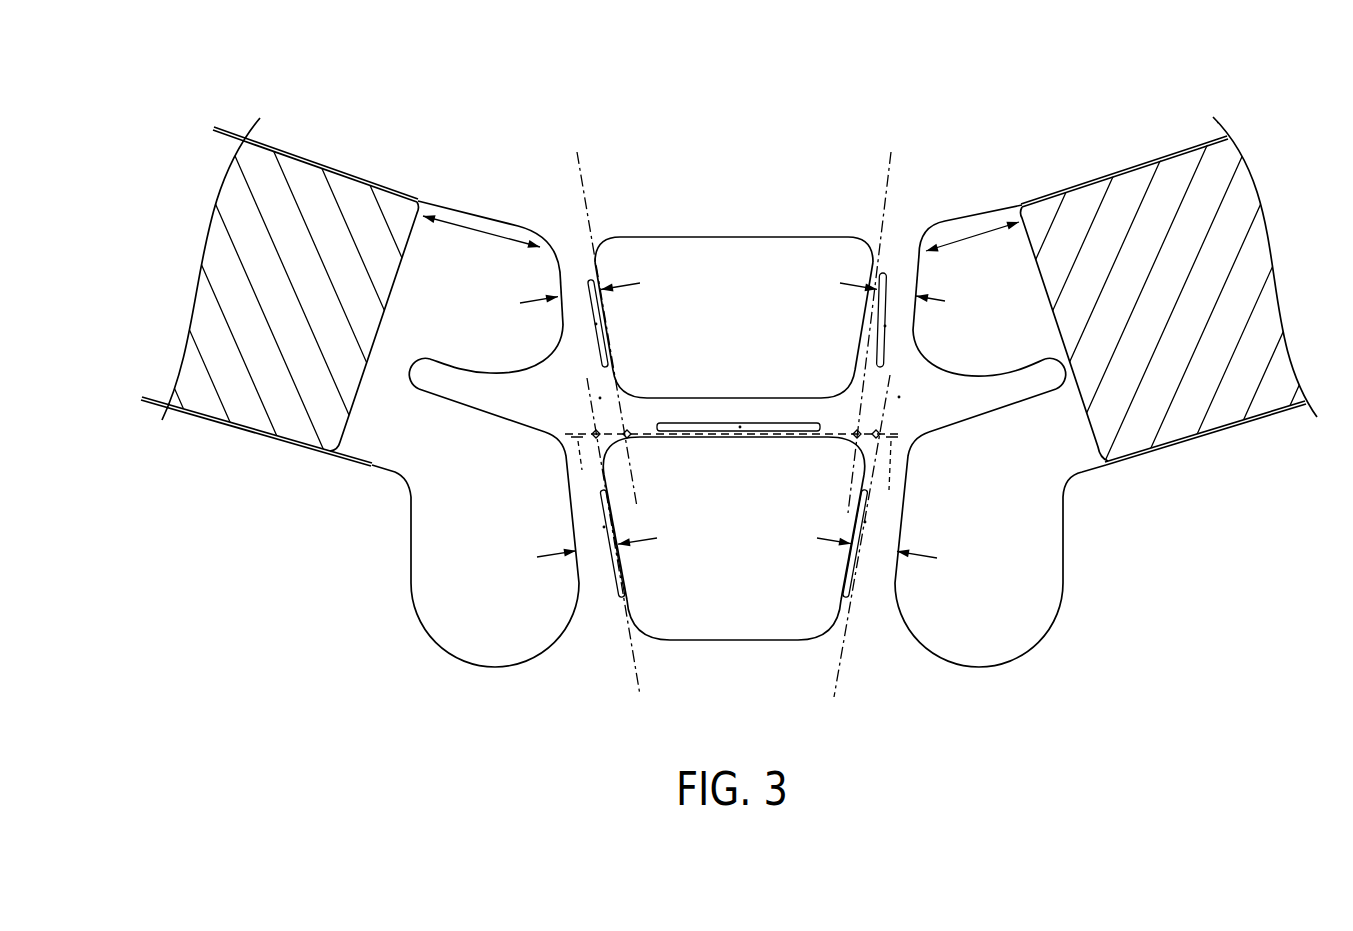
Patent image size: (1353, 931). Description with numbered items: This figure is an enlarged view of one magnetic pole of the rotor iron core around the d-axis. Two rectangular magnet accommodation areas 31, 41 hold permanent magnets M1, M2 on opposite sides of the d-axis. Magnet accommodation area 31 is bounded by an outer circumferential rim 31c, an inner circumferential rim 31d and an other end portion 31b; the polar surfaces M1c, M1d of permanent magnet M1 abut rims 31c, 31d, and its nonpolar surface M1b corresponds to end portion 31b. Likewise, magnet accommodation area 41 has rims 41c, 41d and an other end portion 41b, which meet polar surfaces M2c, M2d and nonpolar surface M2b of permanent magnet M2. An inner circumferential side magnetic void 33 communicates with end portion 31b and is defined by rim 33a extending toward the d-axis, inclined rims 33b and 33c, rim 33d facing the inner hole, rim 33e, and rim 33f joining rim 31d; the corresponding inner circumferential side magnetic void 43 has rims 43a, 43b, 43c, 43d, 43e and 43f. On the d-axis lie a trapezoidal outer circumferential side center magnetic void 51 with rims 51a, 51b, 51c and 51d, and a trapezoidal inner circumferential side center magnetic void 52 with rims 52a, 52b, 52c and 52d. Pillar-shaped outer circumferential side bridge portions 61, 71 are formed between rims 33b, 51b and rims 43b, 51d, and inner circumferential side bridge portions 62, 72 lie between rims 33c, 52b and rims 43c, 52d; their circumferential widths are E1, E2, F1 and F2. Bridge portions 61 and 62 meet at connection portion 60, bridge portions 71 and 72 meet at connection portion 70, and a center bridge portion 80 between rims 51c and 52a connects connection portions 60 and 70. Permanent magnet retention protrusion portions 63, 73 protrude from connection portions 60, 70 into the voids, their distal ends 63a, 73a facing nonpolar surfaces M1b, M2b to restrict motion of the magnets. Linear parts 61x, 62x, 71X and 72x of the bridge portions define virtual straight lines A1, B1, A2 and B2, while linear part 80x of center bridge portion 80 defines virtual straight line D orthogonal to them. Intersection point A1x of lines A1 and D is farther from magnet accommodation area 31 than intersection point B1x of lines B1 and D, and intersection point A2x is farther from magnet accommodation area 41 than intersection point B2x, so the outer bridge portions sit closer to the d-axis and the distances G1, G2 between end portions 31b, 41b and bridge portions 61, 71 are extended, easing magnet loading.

The magnet accommodation area 31 is at (282, 267).
The other end portion 31b is at (397, 171).
The outer circumferential side rim 31c is at (270, 138).
The inner circumferential side rim 31d is at (193, 415).
The inner circumferential side magnetic void 33 is at (475, 397).
The rim 33a is at (514, 225).
The rim 33b is at (556, 278).
The rim 33c is at (571, 491).
The rim 33d is at (527, 660).
The rim 33e is at (411, 541).
The rim 33f is at (375, 465).
The permanent magnet M1 is at (292, 294).
The nonpolar surface M1b is at (396, 291).
The polar surface M1c is at (314, 168).
The polar surface M1d is at (236, 421).
The magnet accommodation area 41 is at (1163, 269).
The other end portion 41b is at (1023, 200).
The outer circumferential side rim 41c is at (1200, 139).
The inner circumferential side rim 41d is at (1273, 415).
The inner circumferential side magnetic void 43 is at (1000, 402).
The rim 43a is at (968, 224).
The rim 43b is at (921, 276).
The rim 43c is at (906, 478).
The rim 43d is at (948, 660).
The rim 43e is at (1063, 550).
The rim 43f is at (1088, 468).
The permanent magnet M2 is at (1107, 299).
The nonpolar surface M2b is at (1046, 307).
The polar surface M2c is at (1162, 168).
The polar surface M2d is at (1201, 428).
The outer circumferential side center magnetic void 51 is at (734, 291).
The rim 51a is at (693, 239).
The rim 51b is at (612, 326).
The rim 51c is at (775, 398).
The rim 51d is at (872, 320).
The inner circumferential side center magnetic void 52 is at (734, 566).
The rim 52a is at (737, 440).
The rim 52b is at (624, 568).
The rim 52c is at (763, 638).
The rim 52d is at (849, 563).
The connection portion 60 is at (601, 398).
The outer circumferential side bridge portion 61 is at (573, 272).
The linear part 61x is at (594, 324).
The inner circumferential side bridge portion 62 is at (597, 565).
The linear part 62x is at (603, 526).
The permanent magnet retention protrusion portion 63 is at (483, 402).
The distal end 63a is at (417, 373).
The connection portion 70 is at (899, 397).
The outer circumferential side bridge portion 71 is at (890, 272).
The linear part 71X is at (887, 326).
The inner circumferential side bridge portion 72 is at (877, 565).
The linear part 72x is at (867, 522).
The permanent magnet retention protrusion portion 73 is at (993, 398).
The distal end 73a is at (1059, 375).
The center bridge portion 80 is at (717, 418).
The linear part 80x is at (740, 426).
The virtual straight line A1 is at (586, 172).
The intersection point A1x is at (629, 432).
The virtual straight line A2 is at (878, 172).
The intersection point A2x is at (855, 432).
The virtual straight line B1 is at (603, 707).
The intersection point B1x is at (594, 432).
The virtual straight line B2 is at (875, 707).
The intersection point B2x is at (878, 432).
The virtual straight line D is at (734, 468).
The width of outer circumferential side bridge portion E1 is at (552, 303).
The width of outer circumferential side bridge portion E2 is at (940, 300).
The width of inner circumferential side bridge portion F1 is at (577, 558).
The width of inner circumferential side bridge portion F2 is at (900, 558).
The distance G1 is at (466, 265).
The distance G2 is at (957, 228).